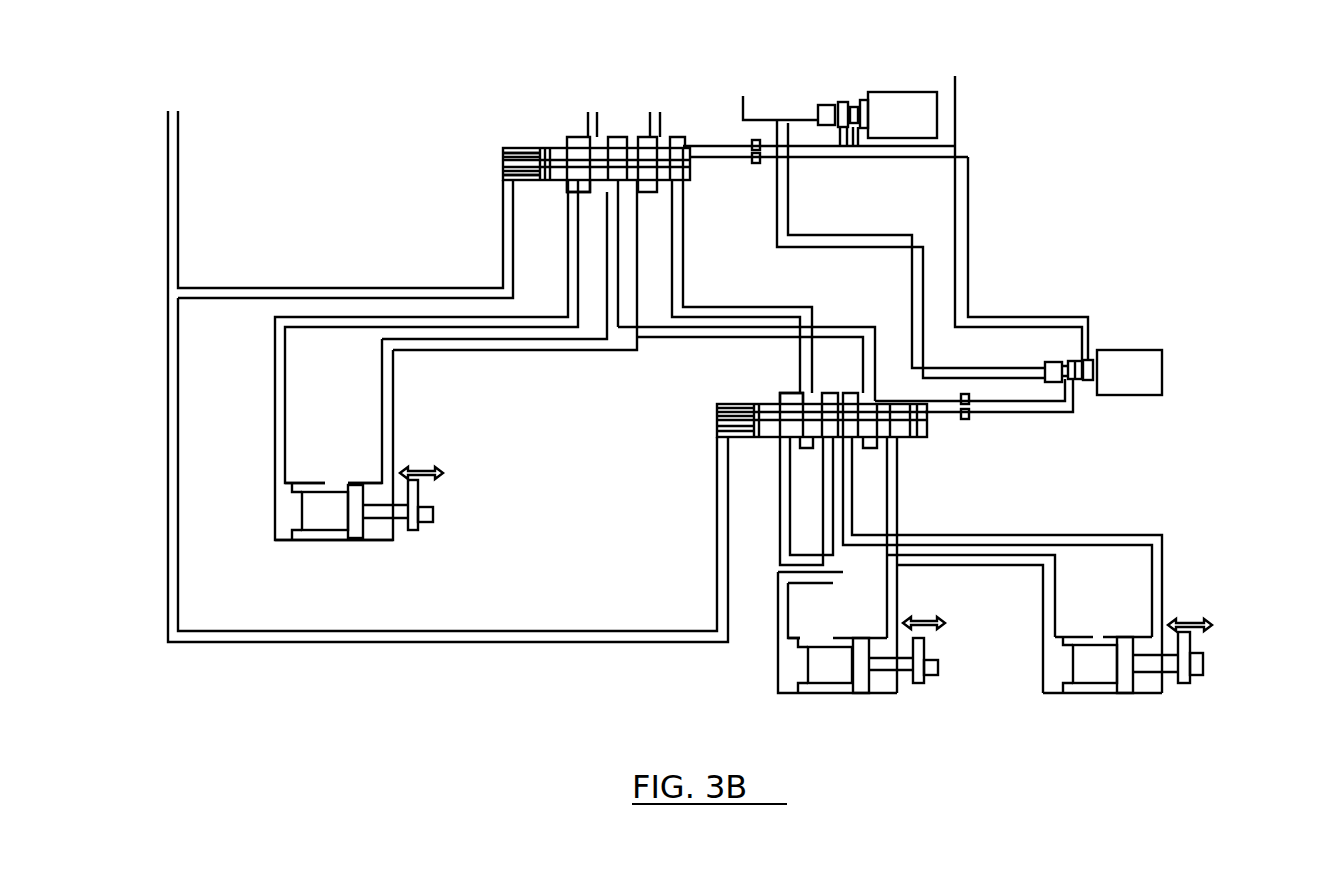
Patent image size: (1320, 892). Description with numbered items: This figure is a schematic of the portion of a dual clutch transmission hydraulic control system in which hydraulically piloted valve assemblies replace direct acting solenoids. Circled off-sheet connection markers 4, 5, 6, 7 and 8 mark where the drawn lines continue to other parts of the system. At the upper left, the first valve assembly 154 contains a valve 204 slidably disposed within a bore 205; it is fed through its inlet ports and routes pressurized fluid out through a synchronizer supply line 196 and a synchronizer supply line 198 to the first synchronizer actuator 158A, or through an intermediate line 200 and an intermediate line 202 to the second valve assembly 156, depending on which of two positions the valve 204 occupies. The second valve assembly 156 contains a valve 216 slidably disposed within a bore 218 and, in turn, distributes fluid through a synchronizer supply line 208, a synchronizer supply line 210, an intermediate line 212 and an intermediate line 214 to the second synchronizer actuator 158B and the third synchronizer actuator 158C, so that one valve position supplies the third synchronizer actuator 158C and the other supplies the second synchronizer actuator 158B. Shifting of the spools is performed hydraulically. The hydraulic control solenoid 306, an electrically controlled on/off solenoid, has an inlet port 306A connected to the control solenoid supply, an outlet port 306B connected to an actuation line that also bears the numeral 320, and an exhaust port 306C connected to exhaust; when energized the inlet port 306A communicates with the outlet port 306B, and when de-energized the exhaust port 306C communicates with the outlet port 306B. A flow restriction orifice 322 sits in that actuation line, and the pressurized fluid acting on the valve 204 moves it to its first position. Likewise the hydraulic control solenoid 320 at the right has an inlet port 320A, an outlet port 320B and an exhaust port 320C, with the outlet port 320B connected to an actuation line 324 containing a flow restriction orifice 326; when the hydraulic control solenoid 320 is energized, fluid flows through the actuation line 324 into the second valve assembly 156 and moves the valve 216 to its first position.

The port 4 is at (442, 360).
The port 5 is at (592, 108).
The port 6 is at (655, 108).
The port 7 is at (773, 92).
The port 8 is at (1016, 203).
The first valve assembly 154 is at (492, 166).
The second valve assembly 156 is at (712, 430).
The first synchronizer actuator 158A is at (446, 463).
The second synchronizer actuator 158B is at (910, 704).
The third synchronizer actuator 158C is at (1184, 704).
The synchronizer supply line 196 is at (335, 315).
The synchronizer supply line 198 is at (515, 352).
The intermediate line 200 is at (678, 338).
The intermediate line 202 is at (733, 307).
The valve 204 is at (562, 183).
The bore 205 is at (522, 145).
The synchronizer supply line 208 is at (1043, 565).
The synchronizer supply line 210 is at (775, 572).
The intermediate line 212 is at (1160, 533).
The intermediate line 214 is at (900, 479).
The valve 216 is at (795, 394).
The bore 218 is at (770, 446).
The hydraulic control solenoid 306 is at (900, 92).
The inlet port 306A is at (822, 105).
The outlet port 306B is at (845, 130).
The exhaust port 306C is at (857, 130).
The hydraulic control solenoid 320 is at (800, 145).
The inlet port 320A is at (1043, 372).
The outlet port 320B is at (1071, 387).
The exhaust port 320C is at (1090, 352).
The flow restriction orifice 322 is at (757, 163).
The actuation line 324 is at (1043, 415).
The flow restriction orifice 326 is at (968, 420).